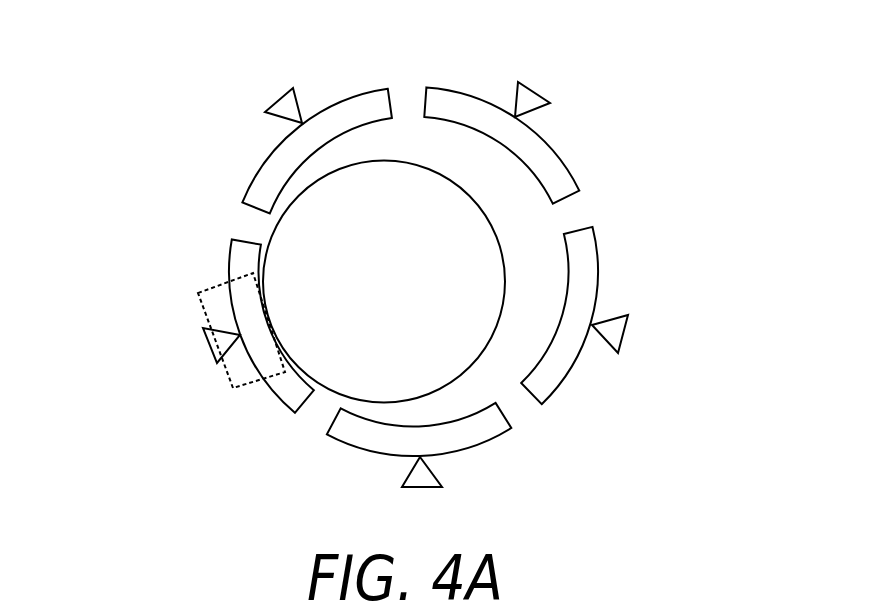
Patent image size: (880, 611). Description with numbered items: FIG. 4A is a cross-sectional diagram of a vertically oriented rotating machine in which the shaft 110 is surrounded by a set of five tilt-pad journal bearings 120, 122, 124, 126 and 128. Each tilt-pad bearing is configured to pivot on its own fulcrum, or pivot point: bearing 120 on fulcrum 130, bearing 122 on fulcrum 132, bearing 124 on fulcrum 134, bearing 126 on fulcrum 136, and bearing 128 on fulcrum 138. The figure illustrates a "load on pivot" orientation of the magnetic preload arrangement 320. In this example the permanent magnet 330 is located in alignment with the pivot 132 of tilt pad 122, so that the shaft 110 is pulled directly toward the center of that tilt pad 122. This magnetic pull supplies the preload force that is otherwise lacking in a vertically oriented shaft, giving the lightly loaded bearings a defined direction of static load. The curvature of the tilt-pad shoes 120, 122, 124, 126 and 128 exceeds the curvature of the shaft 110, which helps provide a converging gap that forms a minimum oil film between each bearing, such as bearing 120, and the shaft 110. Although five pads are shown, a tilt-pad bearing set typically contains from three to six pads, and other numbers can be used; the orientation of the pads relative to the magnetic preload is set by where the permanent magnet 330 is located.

The shaft 110 is at (404, 294).
The tilt-pad journal bearing 120 is at (447, 433).
The tilt-pad journal bearing 122 is at (290, 382).
The tilt-pad journal bearing 124 is at (273, 160).
The tilt-pad journal bearing 126 is at (470, 98).
The tilt-pad journal bearing 128 is at (583, 247).
The fulcrum 130 is at (408, 477).
The fulcrum 132 is at (203, 342).
The fulcrum 134 is at (280, 103).
The fulcrum 136 is at (547, 102).
The fulcrum 138 is at (608, 315).
The assembly 320 is at (676, 59).
The permanent magnet 330 is at (230, 382).